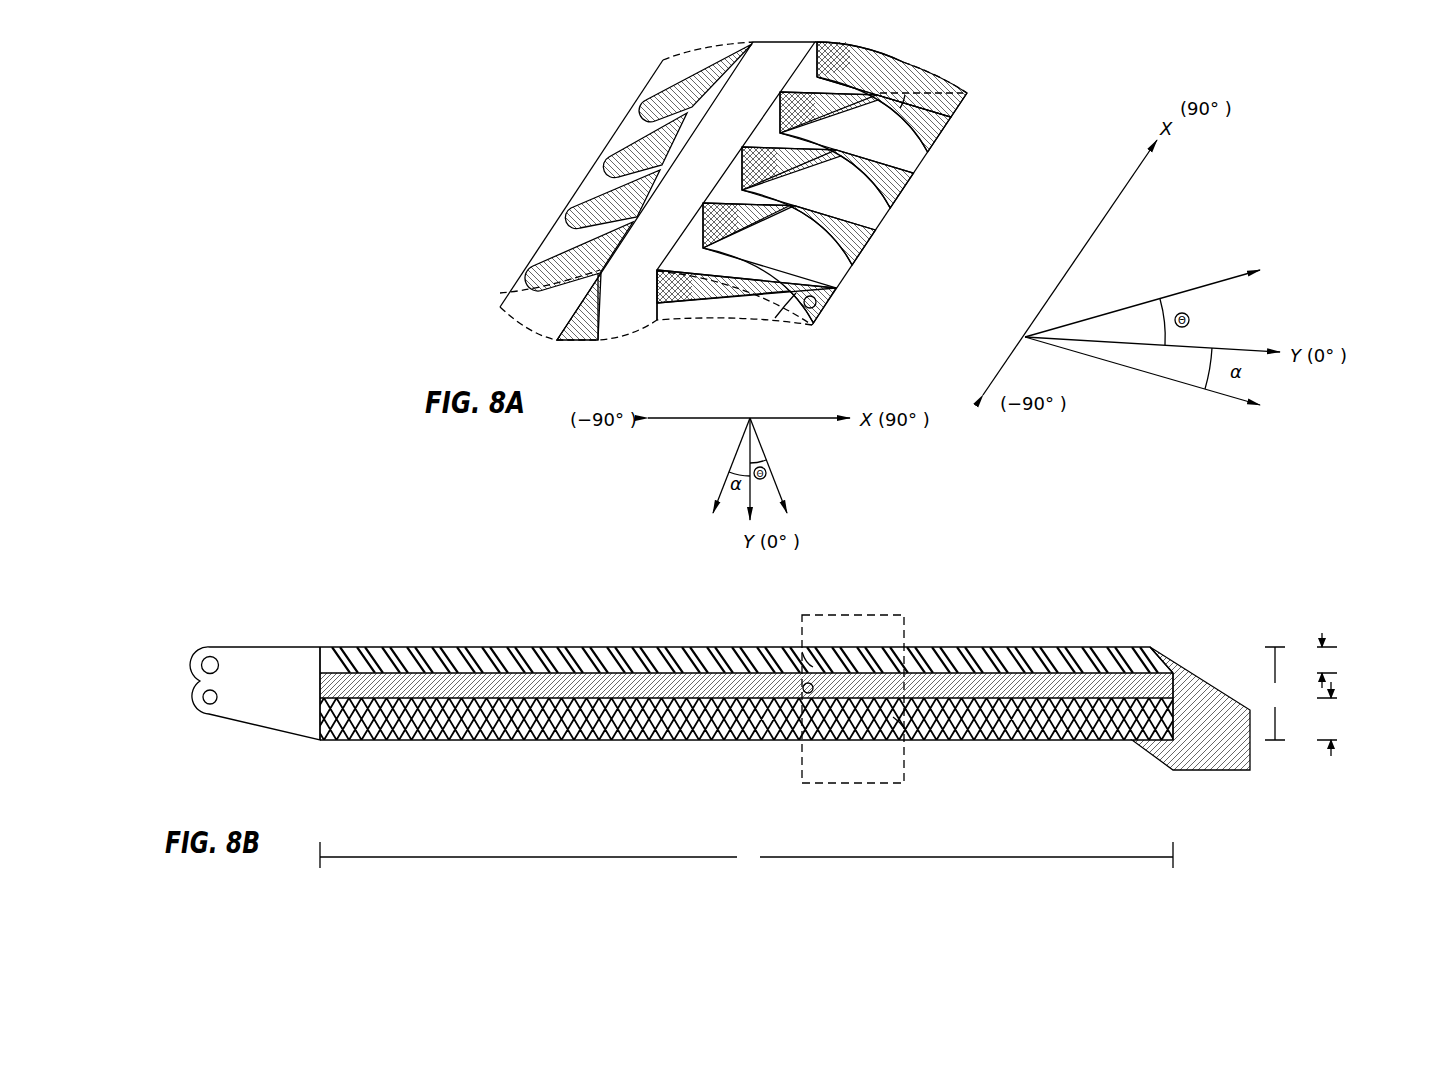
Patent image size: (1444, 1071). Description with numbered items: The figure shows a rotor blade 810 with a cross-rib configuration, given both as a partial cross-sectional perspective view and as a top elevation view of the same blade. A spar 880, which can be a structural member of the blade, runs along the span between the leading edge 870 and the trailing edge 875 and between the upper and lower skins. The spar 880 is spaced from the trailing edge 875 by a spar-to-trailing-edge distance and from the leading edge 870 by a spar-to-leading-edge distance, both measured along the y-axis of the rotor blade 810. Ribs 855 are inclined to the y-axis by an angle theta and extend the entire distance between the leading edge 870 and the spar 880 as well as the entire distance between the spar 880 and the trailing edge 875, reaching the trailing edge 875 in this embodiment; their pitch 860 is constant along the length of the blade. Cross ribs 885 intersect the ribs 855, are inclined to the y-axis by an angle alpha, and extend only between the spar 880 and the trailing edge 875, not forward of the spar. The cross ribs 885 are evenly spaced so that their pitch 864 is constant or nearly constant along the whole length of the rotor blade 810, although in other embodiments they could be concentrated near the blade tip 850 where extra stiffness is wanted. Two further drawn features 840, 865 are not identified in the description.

In FIG. 8A, the rotor blade 810 is at (517, 130).
In FIG. 8B, the rotor blade 810 is at (190, 543).
In FIG. 8B, the root fitting 840 is at (258, 646).
In FIG. 8B, the blade tip 850 is at (1198, 672).
In FIG. 8A, the ribs 855 is at (905, 150).
In FIG. 8B, the ribs 855 is at (463, 647).
In FIG. 8B, the pitch 860 is at (543, 662).
In FIG. 8B, the pitch 864 is at (547, 718).
In FIG. 8B, the pin hole 865 is at (215, 705).
In FIG. 8B, the leading edge 870 is at (943, 646).
In FIG. 8A, the trailing edge 875 is at (967, 93).
In FIG. 8B, the trailing edge 875 is at (1093, 742).
In FIG. 8A, the spar 880 is at (768, 58).
In FIG. 8B, the spar 880 is at (1060, 682).
In FIG. 8A, the cross ribs 885 is at (866, 238).
In FIG. 8B, the cross ribs 885 is at (637, 720).